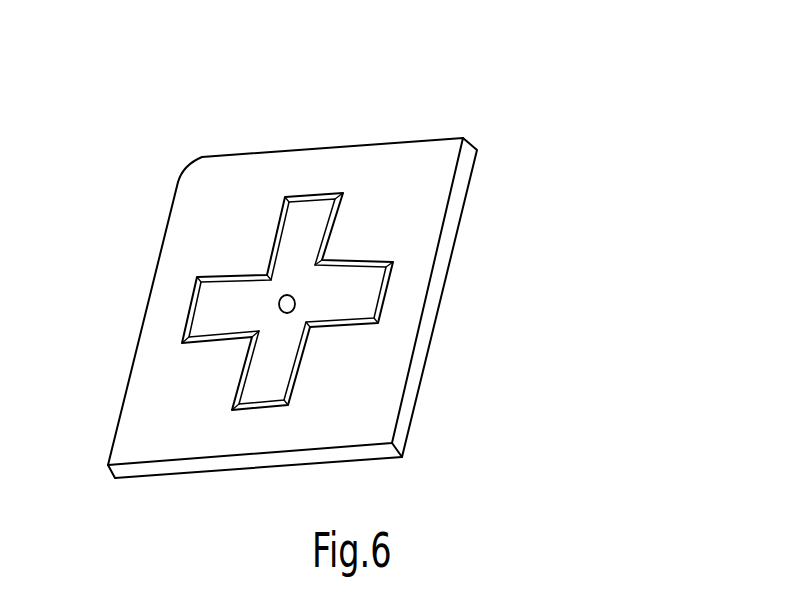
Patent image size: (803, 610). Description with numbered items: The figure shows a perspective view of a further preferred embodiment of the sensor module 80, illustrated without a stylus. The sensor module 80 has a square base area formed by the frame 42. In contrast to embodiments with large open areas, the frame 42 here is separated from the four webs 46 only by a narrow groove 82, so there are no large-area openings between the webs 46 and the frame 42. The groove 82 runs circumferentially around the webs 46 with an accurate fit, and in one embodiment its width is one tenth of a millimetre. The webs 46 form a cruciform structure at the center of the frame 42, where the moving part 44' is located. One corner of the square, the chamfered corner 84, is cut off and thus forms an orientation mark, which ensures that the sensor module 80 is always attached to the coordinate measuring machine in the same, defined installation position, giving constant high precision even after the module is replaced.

The sensor module 80 is at (560, 166).
The chamfered corner 84 is at (188, 168).
The groove 82 is at (275, 238).
The webs 46 is at (307, 223).
The central hole 44' is at (172, 378).
The frame 42 is at (407, 403).